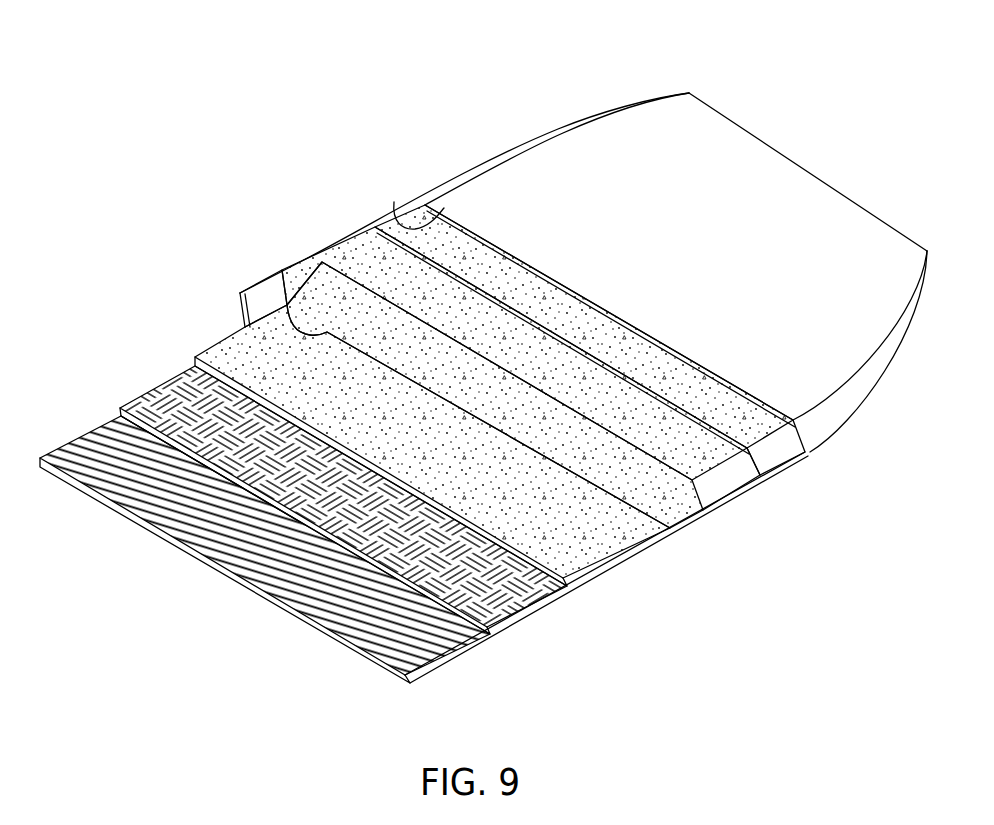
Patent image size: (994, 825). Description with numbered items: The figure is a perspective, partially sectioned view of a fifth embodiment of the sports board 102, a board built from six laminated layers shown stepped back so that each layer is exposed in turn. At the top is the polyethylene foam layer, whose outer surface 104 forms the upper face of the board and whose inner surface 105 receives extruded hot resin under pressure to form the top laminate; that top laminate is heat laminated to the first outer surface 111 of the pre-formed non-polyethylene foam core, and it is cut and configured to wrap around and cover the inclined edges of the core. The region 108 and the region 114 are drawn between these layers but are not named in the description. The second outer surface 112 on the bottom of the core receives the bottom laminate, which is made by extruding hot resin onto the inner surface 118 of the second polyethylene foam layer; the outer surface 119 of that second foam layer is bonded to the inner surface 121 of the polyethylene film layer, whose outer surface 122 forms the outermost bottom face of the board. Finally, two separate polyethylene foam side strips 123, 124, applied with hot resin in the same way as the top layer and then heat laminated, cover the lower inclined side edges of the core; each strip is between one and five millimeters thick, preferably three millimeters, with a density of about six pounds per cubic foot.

The sports board 102 is at (482, 133).
The outer surface of polyethylene foam layer 104 is at (739, 226).
The inner surface of polyethylene foam layer 105 is at (397, 225).
The first intermediate layer 108 is at (488, 266).
The first outer surface of non-polyethylene foam layer 111 is at (530, 355).
The second outer surface of non-polyethylene foam layer 112 is at (283, 270).
The third intermediate layer 114 is at (477, 463).
The inner surface of second polyethylene foam layer 118 is at (390, 517).
The outer surface of second polyethylene foam layer 119 is at (153, 440).
The inner surface of polyethylene film layer 121 is at (305, 573).
The outer surface of polyethylene film layer 122 is at (82, 493).
The side strip 123 is at (240, 310).
The side strip 124 is at (747, 490).